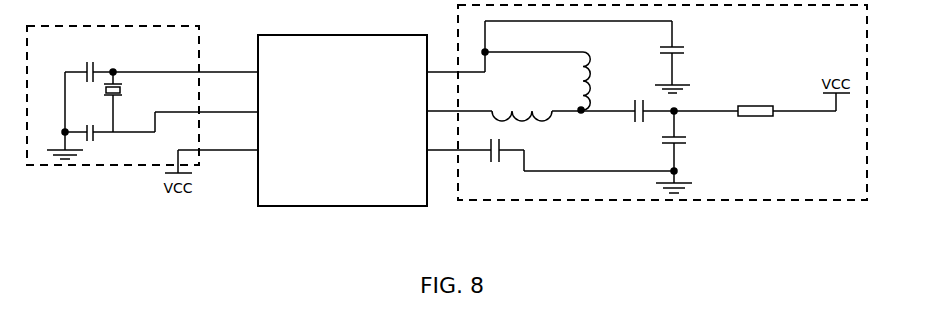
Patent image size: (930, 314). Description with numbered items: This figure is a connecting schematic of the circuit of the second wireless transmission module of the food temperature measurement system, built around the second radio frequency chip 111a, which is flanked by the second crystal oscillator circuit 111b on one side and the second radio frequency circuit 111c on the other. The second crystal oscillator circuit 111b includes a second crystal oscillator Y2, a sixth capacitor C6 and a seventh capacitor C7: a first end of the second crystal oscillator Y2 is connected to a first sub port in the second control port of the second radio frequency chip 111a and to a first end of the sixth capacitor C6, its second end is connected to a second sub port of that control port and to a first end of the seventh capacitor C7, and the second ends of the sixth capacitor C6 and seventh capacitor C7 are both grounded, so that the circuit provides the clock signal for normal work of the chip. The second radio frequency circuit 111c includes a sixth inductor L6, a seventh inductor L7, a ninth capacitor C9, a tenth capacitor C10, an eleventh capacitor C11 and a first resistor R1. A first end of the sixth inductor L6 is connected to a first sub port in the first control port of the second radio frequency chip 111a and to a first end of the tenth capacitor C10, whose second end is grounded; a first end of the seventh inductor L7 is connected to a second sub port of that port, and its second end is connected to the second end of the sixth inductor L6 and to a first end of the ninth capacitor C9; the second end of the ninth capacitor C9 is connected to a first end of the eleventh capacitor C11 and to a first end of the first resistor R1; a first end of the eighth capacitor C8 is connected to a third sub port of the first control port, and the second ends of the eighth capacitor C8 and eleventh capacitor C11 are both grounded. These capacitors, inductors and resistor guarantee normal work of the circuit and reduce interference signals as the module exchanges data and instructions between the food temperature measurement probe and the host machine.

The second radio frequency chip 111a is at (342, 120).
The second crystal oscillator circuit 111b is at (163, 26).
The second radio frequency circuit 111c is at (857, 57).
The sixth capacitor C6 is at (92, 62).
The seventh capacitor C7 is at (92, 124).
The eighth capacitor C8 is at (491, 162).
The ninth capacitor C9 is at (639, 123).
The tenth capacitor C10 is at (690, 44).
The eleventh capacitor C11 is at (692, 141).
The second crystal oscillator Y2 is at (127, 102).
The sixth inductor L6 is at (522, 108).
The seventh inductor L7 is at (599, 81).
The first resistor R1 is at (755, 100).